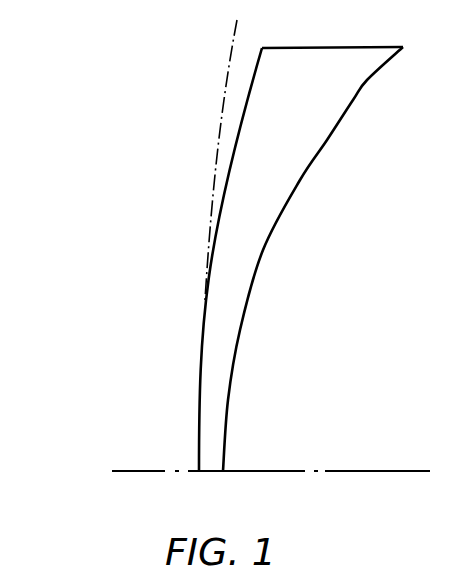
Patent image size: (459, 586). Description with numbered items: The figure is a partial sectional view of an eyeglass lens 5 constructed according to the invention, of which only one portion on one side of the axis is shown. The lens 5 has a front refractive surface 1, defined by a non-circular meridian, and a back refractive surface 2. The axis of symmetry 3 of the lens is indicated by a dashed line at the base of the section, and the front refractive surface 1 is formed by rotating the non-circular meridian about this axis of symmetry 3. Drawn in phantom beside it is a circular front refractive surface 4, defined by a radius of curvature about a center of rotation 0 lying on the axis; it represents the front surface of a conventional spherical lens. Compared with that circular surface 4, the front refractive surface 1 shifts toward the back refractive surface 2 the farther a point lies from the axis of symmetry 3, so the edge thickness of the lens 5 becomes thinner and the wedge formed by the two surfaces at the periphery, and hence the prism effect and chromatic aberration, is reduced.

The center of rotation 0 is at (197, 470).
The front refractive surface 1 is at (257, 62).
The back refractive surface 2 is at (329, 138).
The axis of symmetry 3 is at (128, 471).
The circular front refractive surface 4 is at (215, 150).
The eyeglass lens 5 is at (277, 302).